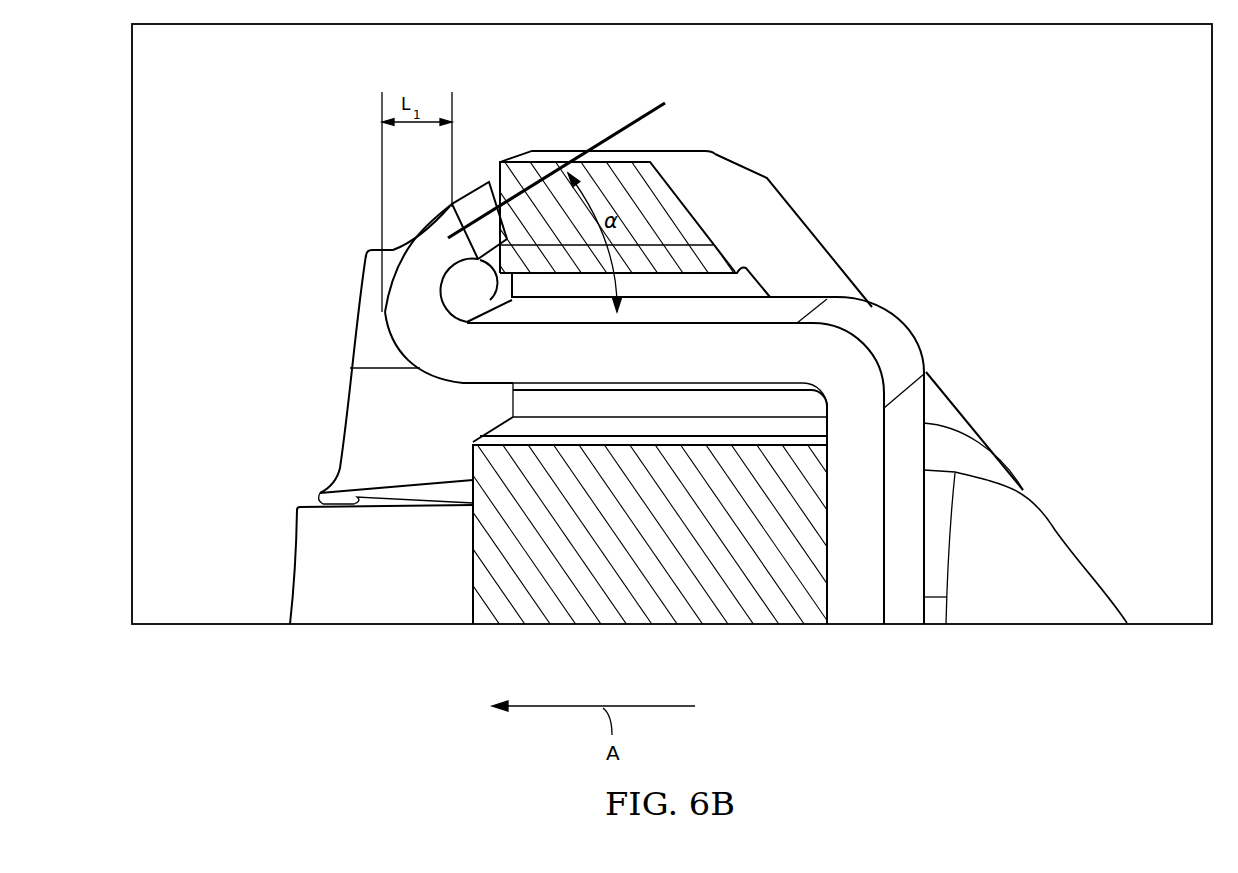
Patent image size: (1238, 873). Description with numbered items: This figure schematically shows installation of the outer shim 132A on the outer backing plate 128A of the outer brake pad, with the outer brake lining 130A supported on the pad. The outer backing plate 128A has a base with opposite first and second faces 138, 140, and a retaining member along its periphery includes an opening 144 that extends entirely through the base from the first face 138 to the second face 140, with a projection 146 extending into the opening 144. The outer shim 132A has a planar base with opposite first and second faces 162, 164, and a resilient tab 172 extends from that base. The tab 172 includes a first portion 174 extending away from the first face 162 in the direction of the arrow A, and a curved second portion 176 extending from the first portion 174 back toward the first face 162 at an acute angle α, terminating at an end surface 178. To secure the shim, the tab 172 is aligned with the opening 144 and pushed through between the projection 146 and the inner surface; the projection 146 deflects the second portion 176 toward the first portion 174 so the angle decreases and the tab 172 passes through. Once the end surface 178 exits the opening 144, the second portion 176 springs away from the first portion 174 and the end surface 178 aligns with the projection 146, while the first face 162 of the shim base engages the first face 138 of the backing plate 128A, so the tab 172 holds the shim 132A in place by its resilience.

The outer brake lining 130A is at (282, 585).
The outer shim 132A is at (400, 303).
The opening 144 is at (470, 415).
The second portion 176 is at (418, 255).
The end surface 178 is at (470, 208).
The projection 146 is at (663, 215).
The first portion 174 is at (748, 340).
The tab 172 is at (915, 320).
The first face 138 is at (835, 600).
The second face 164 is at (907, 453).
The second face 140 is at (470, 592).
The first face 162 is at (830, 573).
The outer backing plate 128A is at (508, 608).